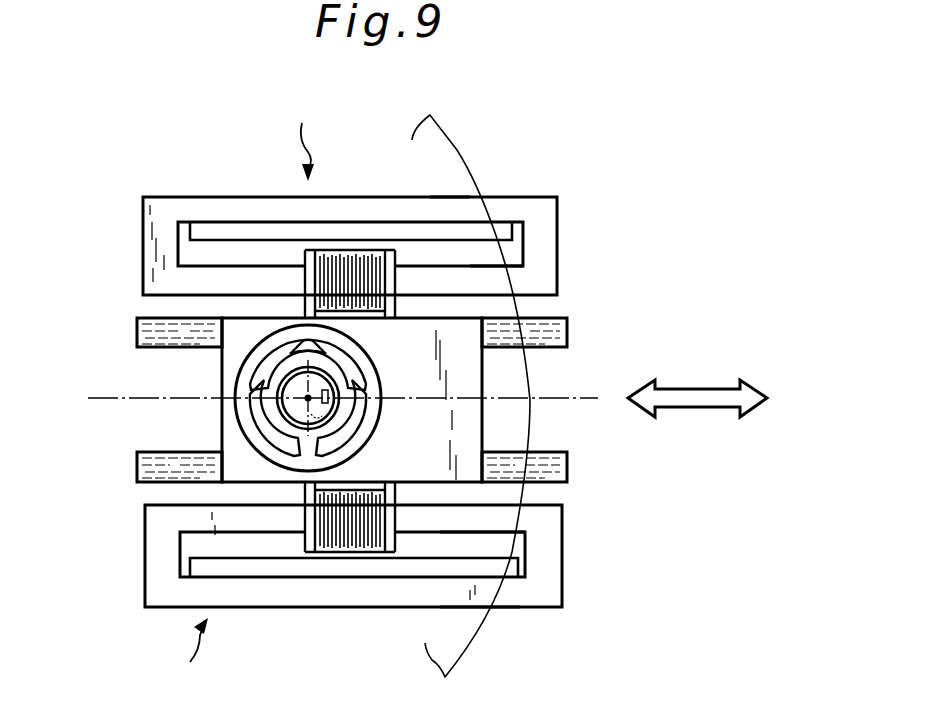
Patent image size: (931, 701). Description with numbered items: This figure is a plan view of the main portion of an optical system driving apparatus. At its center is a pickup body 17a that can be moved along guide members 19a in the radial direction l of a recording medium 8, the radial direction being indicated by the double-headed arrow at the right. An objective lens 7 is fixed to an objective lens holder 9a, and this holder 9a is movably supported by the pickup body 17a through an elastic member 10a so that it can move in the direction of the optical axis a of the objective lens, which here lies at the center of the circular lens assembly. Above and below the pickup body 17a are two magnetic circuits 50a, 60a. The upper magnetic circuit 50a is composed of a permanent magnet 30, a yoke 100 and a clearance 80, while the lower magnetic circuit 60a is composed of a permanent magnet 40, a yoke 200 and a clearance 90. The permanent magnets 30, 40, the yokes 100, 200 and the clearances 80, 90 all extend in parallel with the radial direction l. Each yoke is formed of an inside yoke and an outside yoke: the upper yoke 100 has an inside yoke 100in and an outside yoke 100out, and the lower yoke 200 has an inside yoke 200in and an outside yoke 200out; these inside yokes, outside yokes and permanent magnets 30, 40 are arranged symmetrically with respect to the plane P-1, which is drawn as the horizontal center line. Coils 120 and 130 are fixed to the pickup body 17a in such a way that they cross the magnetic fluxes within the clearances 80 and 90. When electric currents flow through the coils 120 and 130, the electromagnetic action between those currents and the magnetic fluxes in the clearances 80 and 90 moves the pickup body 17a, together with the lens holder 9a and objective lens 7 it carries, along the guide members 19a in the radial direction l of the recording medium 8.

The recording medium 8 is at (460, 137).
The permanent magnet 30 is at (262, 233).
The coil 120 is at (355, 258).
The clearance 80 is at (412, 252).
The yoke 100 is at (568, 128).
The outside yoke 100out is at (440, 207).
The inside yoke 100in is at (470, 278).
The pickup body 17a is at (473, 380).
The guide members 19a is at (567, 330).
The elastic member 10a is at (242, 408).
The objective lens holder 9a is at (276, 385).
The objective lens 7 is at (290, 384).
The optical axis a is at (306, 399).
The plane P-1 is at (100, 396).
The yoke 200 is at (679, 525).
The permanent magnet 40 is at (277, 572).
The clearance 90 is at (417, 548).
The coil 130 is at (338, 552).
The inside yoke 200in is at (485, 527).
The outside yoke 200out is at (483, 593).
The magnetic circuit 50a is at (315, 139).
The magnetic circuit 60a is at (177, 655).
The radial direction l is at (710, 388).